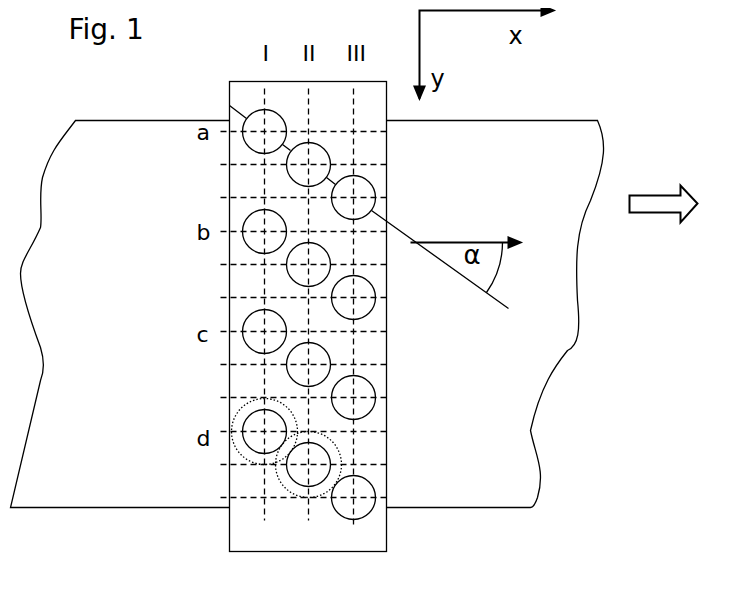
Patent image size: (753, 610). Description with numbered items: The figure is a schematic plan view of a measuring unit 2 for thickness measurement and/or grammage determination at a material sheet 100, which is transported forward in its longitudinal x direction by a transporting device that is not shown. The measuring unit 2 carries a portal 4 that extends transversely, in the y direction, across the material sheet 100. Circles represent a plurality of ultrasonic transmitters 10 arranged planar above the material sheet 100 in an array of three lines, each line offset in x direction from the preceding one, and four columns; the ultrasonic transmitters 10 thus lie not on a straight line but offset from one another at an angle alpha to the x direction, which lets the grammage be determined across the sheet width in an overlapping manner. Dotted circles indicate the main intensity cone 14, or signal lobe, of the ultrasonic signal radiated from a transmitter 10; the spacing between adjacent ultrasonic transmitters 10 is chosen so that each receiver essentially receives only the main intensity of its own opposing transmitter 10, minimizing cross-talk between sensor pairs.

The material sheet 100 is at (512, 407).
The measuring unit 2 is at (404, 491).
The portal 4 is at (228, 523).
The ultrasonic transmitter 10 is at (364, 516).
The main intensity cone 14 is at (280, 483).